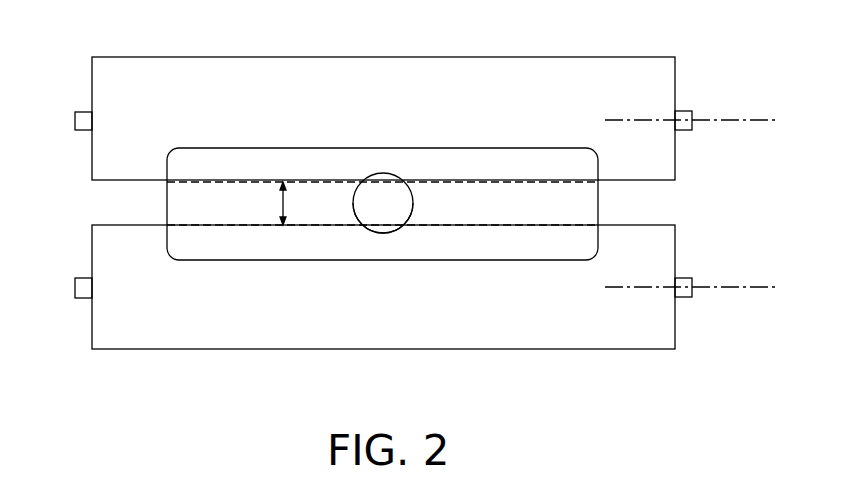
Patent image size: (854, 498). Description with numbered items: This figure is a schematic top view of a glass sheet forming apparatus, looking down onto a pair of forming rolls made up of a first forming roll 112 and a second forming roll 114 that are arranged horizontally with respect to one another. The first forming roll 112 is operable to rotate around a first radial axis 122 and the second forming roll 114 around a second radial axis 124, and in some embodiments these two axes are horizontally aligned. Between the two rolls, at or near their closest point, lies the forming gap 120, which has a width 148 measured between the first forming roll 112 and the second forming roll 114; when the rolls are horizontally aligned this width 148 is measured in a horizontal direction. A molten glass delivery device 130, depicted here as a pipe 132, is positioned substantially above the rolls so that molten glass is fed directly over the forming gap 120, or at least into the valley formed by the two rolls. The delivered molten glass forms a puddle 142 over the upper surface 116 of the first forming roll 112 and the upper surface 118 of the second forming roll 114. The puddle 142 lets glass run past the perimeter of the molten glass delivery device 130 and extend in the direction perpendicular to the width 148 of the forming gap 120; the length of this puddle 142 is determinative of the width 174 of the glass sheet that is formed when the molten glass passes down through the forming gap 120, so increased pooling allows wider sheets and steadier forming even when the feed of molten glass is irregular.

The first forming roll 112 is at (537, 350).
The second forming roll 114 is at (537, 57).
The upper surface of the first forming roll 116 is at (233, 260).
The upper surface of the second forming roll 118 is at (495, 160).
The forming gap 120 is at (678, 218).
The first radial axis 122 is at (755, 288).
The second radial axis 124 is at (755, 120).
The molten glass delivery device 130 is at (383, 173).
The pipe 132 is at (383, 233).
The puddle 142 is at (213, 147).
The width of the forming gap 148 is at (290, 205).
The width of the glass sheet 174 is at (165, 207).